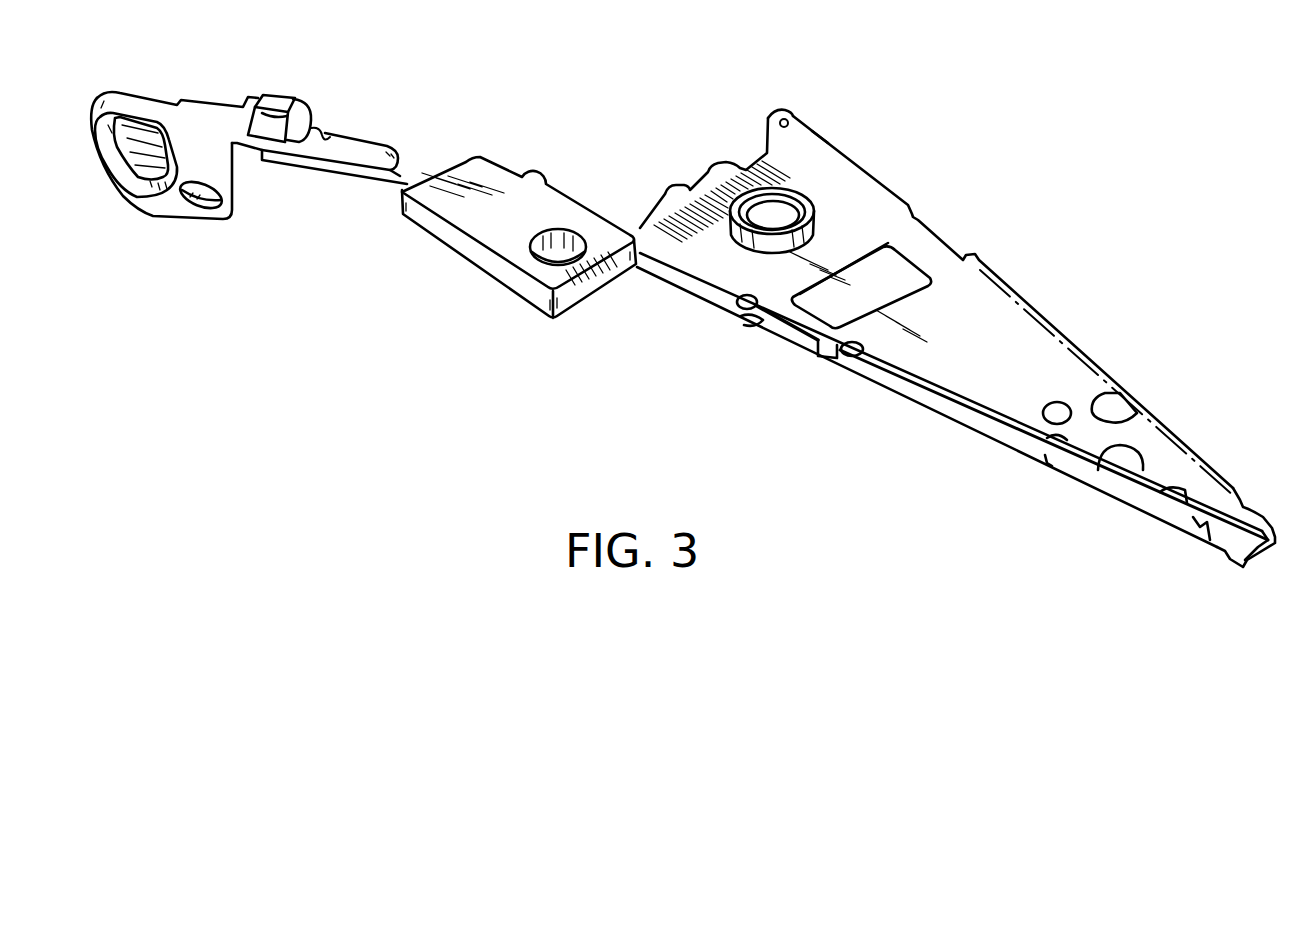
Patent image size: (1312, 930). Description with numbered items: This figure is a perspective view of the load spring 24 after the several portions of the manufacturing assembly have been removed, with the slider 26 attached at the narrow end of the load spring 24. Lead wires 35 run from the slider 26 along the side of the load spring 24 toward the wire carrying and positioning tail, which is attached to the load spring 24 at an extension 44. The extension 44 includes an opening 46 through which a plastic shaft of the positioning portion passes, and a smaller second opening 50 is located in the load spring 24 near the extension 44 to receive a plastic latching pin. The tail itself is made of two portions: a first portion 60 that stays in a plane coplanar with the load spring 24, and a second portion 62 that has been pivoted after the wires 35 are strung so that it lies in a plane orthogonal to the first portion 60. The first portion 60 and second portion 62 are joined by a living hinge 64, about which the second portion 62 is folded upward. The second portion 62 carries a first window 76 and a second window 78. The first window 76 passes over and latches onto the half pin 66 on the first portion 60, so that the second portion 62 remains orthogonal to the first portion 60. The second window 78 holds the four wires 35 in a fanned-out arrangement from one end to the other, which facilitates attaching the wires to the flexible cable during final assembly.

The load spring 24 is at (1025, 343).
The slider 26 is at (1227, 557).
The lead wires 35 is at (125, 165).
The extension 44 is at (768, 115).
The opening 46 is at (788, 118).
The second opening 50 is at (820, 137).
The first portion 60 is at (503, 237).
The second portion 62 is at (195, 140).
The living hinge 64 is at (403, 157).
The half pin 66 is at (277, 110).
The first window 76 is at (307, 103).
The second window 78 is at (156, 182).